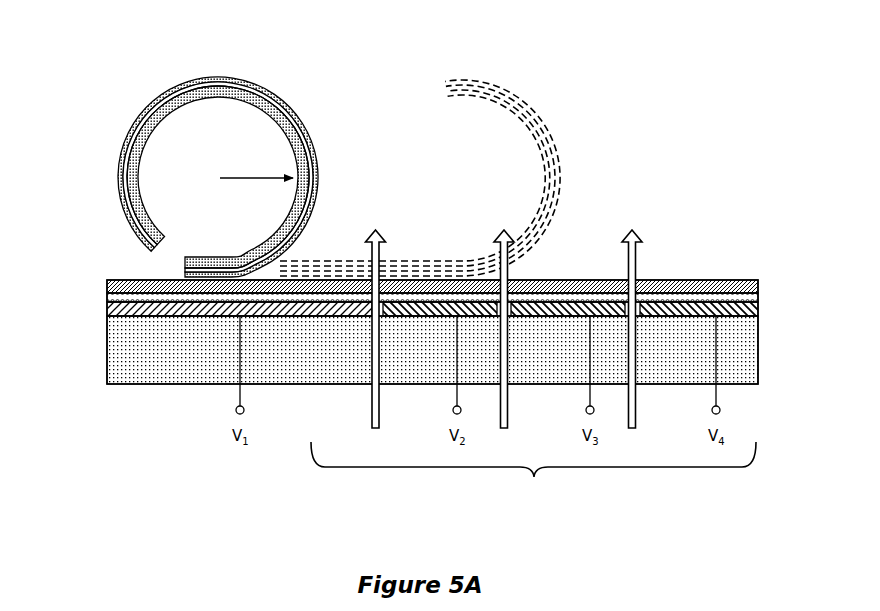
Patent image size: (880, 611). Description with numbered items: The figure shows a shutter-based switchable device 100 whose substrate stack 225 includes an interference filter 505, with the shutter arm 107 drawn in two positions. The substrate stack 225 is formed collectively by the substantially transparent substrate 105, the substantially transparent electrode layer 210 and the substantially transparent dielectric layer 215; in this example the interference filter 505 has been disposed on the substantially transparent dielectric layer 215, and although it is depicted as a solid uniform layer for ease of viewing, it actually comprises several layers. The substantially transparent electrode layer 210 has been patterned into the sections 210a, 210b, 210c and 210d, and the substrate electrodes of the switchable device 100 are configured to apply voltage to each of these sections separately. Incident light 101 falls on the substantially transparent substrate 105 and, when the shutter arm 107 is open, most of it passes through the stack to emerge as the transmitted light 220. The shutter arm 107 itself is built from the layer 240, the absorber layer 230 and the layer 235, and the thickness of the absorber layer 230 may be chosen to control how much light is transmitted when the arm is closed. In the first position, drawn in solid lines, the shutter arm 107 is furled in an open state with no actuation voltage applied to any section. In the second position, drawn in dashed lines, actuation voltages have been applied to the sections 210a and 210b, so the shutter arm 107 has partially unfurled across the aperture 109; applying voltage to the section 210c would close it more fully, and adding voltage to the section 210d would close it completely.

The switchable device 100 is at (116, 498).
The incident light 101 is at (343, 408).
The substantially transparent substrate 105 is at (127, 373).
The shutter arm 107 is at (321, 146).
The aperture 109 is at (533, 472).
The substantially transparent electrode layer 210 is at (464, 366).
The section 210a is at (178, 316).
The section 210b is at (416, 316).
The section 210c is at (548, 316).
The section 210d is at (668, 316).
The substantially transparent dielectric layer 215 is at (758, 296).
The transmitted light 220 is at (637, 231).
The substrate stack 225 is at (434, 325).
The absorber layer 230 is at (162, 93).
The layer 235 is at (237, 260).
The layer 240 is at (320, 190).
The interference filter 505 is at (680, 280).